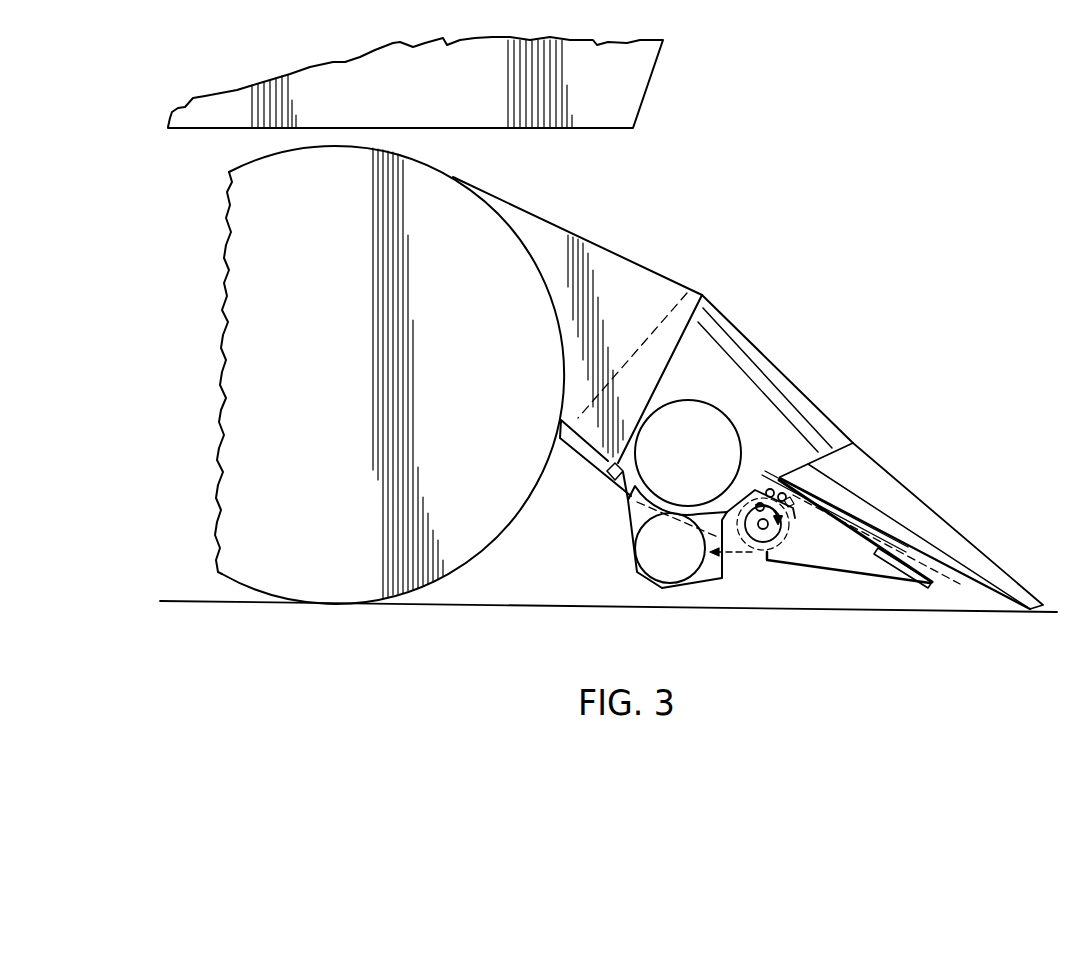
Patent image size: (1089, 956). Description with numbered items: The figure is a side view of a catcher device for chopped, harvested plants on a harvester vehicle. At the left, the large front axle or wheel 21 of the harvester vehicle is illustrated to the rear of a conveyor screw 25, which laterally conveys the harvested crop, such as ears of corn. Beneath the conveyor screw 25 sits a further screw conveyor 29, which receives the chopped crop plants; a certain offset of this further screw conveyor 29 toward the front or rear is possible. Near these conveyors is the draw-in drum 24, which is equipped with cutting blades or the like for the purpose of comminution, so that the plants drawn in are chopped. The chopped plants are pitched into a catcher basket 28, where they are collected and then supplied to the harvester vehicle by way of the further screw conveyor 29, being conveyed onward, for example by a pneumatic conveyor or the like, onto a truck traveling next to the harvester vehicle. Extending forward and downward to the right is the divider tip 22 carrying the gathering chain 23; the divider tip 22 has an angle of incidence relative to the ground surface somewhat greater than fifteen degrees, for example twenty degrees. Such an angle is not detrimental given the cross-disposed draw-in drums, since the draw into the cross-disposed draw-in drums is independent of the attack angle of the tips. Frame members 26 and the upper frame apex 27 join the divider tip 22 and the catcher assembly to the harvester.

The front axle or wheel 21 is at (301, 270).
The divider tip 22 is at (968, 552).
The gathering chain 23 is at (808, 500).
The draw-in drum 24 is at (766, 540).
The conveyor screw 25 is at (711, 424).
The frame members 26 is at (736, 343).
The frame apex 27 is at (703, 294).
The catcher basket 28 is at (701, 576).
The further screw conveyor 29 is at (671, 568).